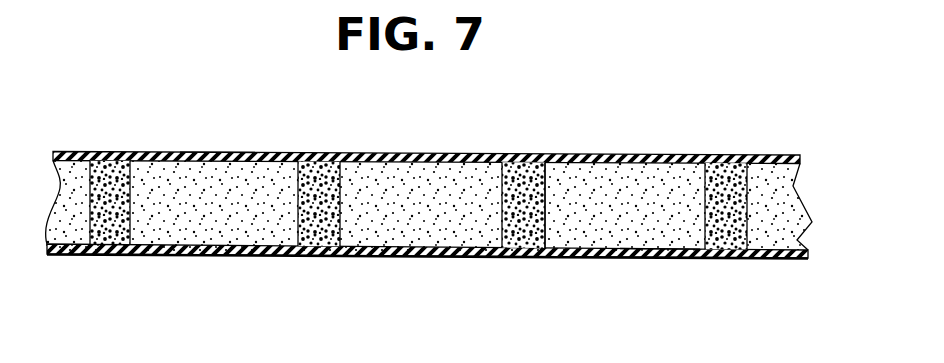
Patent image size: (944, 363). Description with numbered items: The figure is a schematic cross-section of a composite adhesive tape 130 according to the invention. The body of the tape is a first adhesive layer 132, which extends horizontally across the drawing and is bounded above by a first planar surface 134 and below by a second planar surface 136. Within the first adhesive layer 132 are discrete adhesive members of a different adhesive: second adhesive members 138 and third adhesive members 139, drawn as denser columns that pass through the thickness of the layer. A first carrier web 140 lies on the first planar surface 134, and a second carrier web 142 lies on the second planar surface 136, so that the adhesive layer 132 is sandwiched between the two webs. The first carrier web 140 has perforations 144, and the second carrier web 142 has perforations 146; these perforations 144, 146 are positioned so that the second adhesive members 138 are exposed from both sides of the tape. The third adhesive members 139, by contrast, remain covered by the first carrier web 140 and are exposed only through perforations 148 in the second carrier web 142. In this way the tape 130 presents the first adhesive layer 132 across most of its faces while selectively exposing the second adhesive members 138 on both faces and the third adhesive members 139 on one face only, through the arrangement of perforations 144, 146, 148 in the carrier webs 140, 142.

The composite adhesive tape 130 is at (748, 102).
The first adhesive layer 132 is at (182, 226).
The first planar surface 134 is at (170, 161).
The second planar surface 136 is at (447, 246).
The second adhesive members 138 is at (113, 152).
The third adhesive members 139 is at (525, 175).
The first carrier web 140 is at (220, 151).
The second carrier web 142 is at (662, 260).
The perforations 144 is at (534, 157).
The perforations 146 is at (105, 254).
The perforations 148 is at (722, 258).